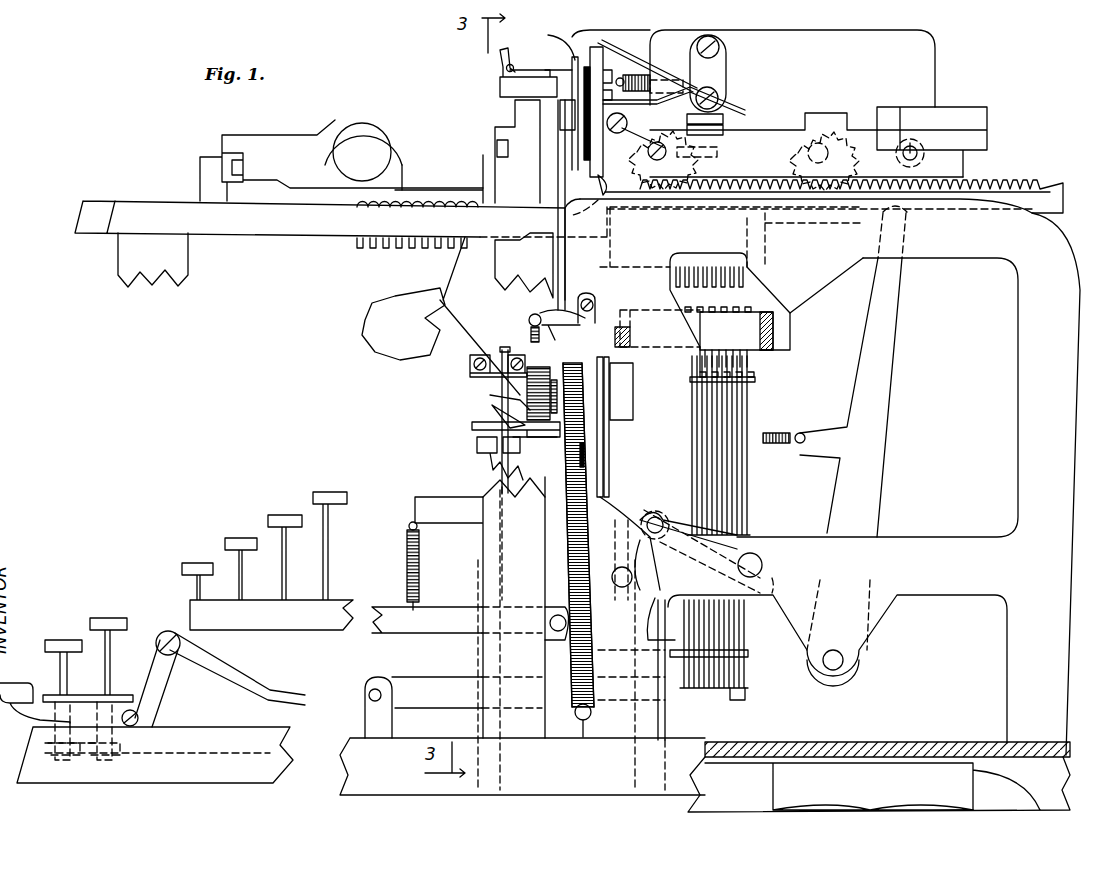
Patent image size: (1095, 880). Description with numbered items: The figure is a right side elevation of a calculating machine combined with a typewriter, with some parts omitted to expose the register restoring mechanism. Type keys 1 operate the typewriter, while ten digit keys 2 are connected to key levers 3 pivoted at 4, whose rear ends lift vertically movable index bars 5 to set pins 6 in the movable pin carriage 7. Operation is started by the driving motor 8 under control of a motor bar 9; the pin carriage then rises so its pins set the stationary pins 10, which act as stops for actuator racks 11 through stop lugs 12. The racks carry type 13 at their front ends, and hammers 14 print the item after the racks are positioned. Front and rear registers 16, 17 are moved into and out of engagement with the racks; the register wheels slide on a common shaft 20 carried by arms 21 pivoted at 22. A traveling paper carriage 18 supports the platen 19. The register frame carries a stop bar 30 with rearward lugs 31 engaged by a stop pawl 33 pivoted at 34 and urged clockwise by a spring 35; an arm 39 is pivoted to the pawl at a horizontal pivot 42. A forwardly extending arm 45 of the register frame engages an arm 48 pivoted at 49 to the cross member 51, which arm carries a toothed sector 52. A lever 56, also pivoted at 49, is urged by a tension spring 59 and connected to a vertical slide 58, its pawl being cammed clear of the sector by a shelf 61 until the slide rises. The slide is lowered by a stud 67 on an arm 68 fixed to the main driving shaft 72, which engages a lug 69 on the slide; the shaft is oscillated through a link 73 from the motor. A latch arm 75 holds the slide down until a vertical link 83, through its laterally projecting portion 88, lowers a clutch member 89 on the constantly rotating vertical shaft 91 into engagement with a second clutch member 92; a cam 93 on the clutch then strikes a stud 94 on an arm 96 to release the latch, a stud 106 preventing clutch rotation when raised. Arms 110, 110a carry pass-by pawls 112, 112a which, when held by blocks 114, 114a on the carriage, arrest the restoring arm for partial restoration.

The type keys 1 is at (248, 540).
The digit keys 2 is at (98, 618).
The key levers 3 is at (280, 727).
The pivot 4 is at (375, 689).
The index bars 5 is at (740, 404).
The pins 6 is at (745, 362).
The pin carriage 7 is at (745, 333).
The driving motor 8 is at (912, 782).
The motor bar 9 is at (18, 690).
The stationary field pins 10 is at (722, 268).
The actuator racks 11 is at (632, 185).
The stop lugs 12 is at (765, 223).
The type 13 is at (387, 244).
The hammers 14 is at (410, 348).
The front register 16 is at (680, 162).
The rear register 17 is at (843, 154).
The paper carriage 18 is at (264, 152).
The platen 19 is at (357, 118).
The common shaft 20 is at (632, 143).
The arms 21 is at (785, 132).
The pivot 22 is at (910, 142).
The stop bar 30 is at (708, 151).
The rearward lugs 31 is at (725, 120).
The stop pawl 33 is at (727, 62).
The pivot 34 is at (719, 48).
The spring 35 is at (640, 76).
The arm 39 is at (590, 31).
The horizontal pivot 42 is at (720, 95).
The forwardly extending arm 45 is at (640, 100).
The arm 48 is at (600, 45).
The pivot 49 is at (608, 390).
The cross member 51 is at (633, 385).
The toothed sector 52 is at (583, 390).
The lever 56 is at (625, 340).
The vertical slide 58 is at (604, 440).
The tension spring 59 is at (585, 482).
The shelf 61 is at (595, 305).
The stud 67 is at (650, 520).
The arm 68 is at (690, 540).
The lug 69 is at (660, 604).
The main driving shaft 72 is at (762, 566).
The link 73 is at (667, 720).
The latch arm 75 is at (548, 312).
The vertical link 83 is at (557, 173).
The laterally projecting portion 88 is at (560, 118).
The clutch member 89 is at (480, 438).
The vertical shaft 91 is at (498, 357).
The second clutch member 92 is at (490, 468).
The cam 93 is at (495, 420).
The stud 94 is at (497, 403).
The arm 96 is at (505, 402).
The stud 106 is at (513, 452).
The arm 110 is at (578, 118).
The arm 110a is at (552, 36).
The pass-by pawl 112 is at (613, 112).
The pass-by pawl 112a is at (625, 64).
The block 114 is at (545, 97).
The block 114a is at (558, 68).